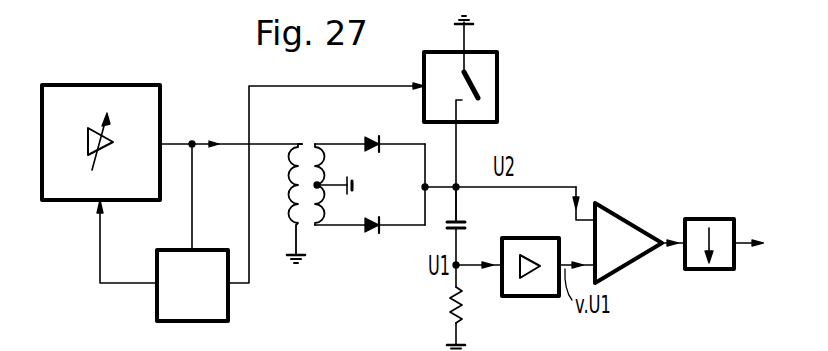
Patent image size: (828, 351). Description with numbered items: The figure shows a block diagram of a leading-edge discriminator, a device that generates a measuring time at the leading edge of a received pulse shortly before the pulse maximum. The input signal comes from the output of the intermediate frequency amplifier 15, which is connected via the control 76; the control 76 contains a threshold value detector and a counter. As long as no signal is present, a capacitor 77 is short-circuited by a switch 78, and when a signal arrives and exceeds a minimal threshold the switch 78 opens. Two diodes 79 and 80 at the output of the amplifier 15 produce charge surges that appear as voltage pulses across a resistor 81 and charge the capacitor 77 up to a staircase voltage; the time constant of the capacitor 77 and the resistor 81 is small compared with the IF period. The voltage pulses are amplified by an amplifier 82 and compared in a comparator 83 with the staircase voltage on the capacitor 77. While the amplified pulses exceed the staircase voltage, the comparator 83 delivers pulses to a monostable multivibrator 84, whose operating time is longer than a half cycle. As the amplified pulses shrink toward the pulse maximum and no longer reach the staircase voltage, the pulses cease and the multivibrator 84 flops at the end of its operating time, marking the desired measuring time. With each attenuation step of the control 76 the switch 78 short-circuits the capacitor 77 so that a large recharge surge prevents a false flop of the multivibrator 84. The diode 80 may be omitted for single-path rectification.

The intermediate frequency amplifier 15 is at (98, 85).
The control 76 is at (228, 307).
The capacitor 77 is at (470, 226).
The switch 78 is at (497, 85).
The diode 79 is at (370, 130).
The diode 80 is at (370, 244).
The resistor 81 is at (443, 307).
The amplifier 82 is at (527, 238).
The comparator 83 is at (627, 212).
The monostable multivibrator 84 is at (704, 219).